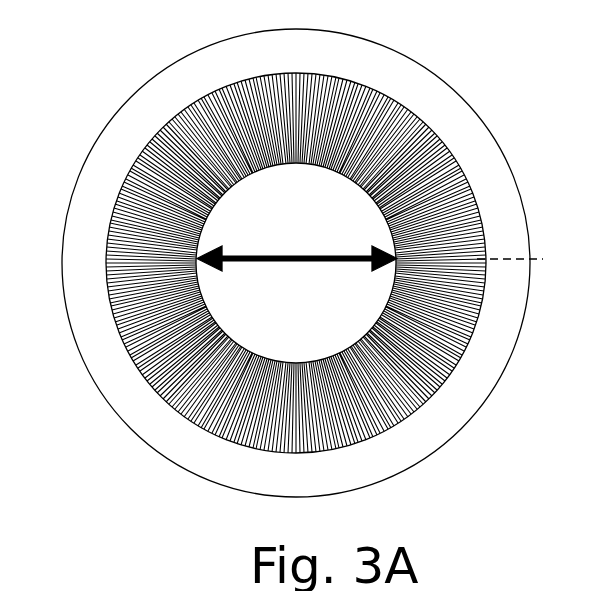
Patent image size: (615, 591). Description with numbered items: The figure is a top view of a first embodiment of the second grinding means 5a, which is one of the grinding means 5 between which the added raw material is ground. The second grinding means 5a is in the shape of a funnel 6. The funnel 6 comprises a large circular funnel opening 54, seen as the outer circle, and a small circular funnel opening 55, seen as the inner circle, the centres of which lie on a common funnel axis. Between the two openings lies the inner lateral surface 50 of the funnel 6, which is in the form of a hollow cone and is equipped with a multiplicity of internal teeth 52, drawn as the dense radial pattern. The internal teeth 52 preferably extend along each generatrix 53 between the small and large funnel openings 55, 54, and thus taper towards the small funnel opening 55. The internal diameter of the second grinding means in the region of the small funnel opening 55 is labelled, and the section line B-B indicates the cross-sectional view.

The second grinding means 5 is at (302, 292).
The second grinding means 5a is at (302, 292).
The funnel 6 is at (131, 510).
The inner lateral surface 50 is at (253, 263).
The internal teeth 52 is at (112, 317).
The generatrix 53 is at (531, 264).
The large circular funnel opening 54 is at (146, 128).
The small circular funnel opening 55 is at (343, 235).